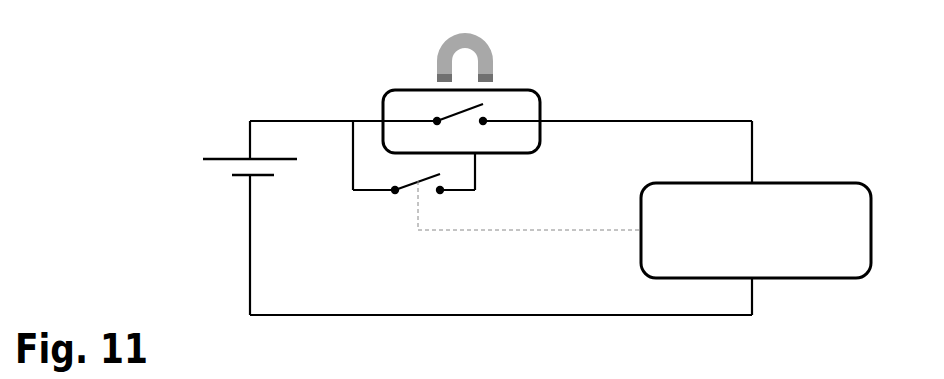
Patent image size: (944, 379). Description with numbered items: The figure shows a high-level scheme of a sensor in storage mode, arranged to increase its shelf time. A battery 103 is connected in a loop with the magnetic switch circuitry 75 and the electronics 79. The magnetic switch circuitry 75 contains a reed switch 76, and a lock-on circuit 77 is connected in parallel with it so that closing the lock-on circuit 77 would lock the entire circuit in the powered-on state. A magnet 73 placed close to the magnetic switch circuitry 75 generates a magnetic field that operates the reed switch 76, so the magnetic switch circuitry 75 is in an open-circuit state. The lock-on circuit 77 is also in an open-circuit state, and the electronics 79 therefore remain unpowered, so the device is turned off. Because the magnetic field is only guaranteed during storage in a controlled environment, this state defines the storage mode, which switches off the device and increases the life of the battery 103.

The magnet 73 is at (475, 42).
The magnetic switch circuitry 75 is at (540, 90).
The reed switch 76 is at (447, 110).
The lock-on circuit 77 is at (410, 190).
The electronics 79 is at (786, 183).
The battery 103 is at (228, 168).